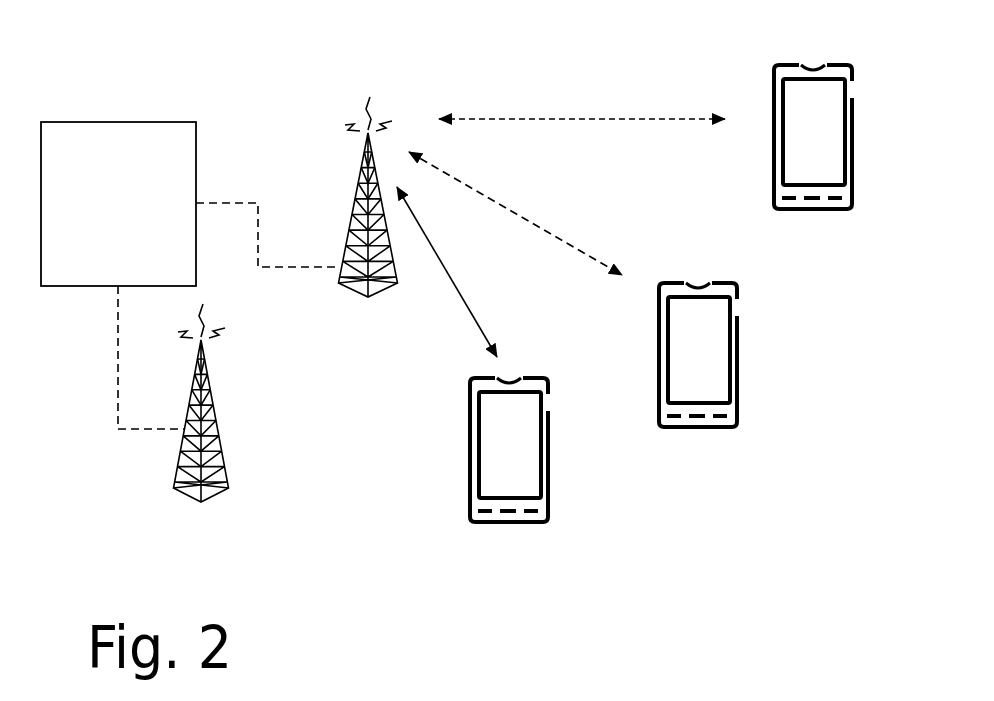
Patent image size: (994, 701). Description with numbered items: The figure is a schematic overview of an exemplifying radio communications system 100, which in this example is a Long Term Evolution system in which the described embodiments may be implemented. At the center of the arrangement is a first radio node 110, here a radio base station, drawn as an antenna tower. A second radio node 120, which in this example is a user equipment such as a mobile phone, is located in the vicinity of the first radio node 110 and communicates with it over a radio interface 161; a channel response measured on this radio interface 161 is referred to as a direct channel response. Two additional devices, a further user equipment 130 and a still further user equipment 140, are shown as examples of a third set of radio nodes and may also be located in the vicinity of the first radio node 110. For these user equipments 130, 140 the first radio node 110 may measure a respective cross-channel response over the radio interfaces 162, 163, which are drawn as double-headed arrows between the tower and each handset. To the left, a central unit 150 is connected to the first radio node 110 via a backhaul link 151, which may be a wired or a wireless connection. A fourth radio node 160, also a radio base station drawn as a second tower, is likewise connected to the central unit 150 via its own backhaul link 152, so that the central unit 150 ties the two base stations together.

The radio communications system 100 is at (246, 143).
The first radio node 110 is at (368, 223).
The second radio node 120 is at (509, 450).
The further user equipment 130 is at (698, 355).
The still further user equipment 140 is at (813, 137).
The central unit 150 is at (118, 204).
The backhaul link 151 is at (268, 235).
The backhaul link 152 is at (120, 357).
The fourth radio node 160 is at (174, 418).
The radio interface 161 is at (447, 272).
The radio interface 162 is at (515, 213).
The radio interface 163 is at (582, 99).